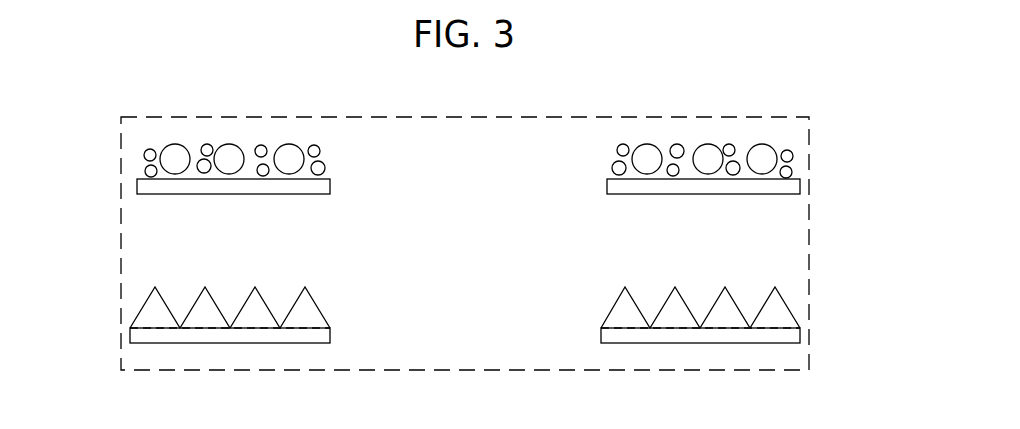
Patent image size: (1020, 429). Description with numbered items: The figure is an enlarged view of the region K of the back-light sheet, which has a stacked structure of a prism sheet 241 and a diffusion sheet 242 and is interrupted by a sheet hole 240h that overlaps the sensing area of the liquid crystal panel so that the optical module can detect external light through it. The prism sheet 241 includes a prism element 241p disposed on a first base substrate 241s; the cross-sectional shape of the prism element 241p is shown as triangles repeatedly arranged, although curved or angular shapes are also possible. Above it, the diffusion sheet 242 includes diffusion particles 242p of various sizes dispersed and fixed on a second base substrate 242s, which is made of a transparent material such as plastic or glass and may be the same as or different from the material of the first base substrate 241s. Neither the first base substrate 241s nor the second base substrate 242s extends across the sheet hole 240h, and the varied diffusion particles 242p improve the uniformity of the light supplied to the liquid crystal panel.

The K1 region K is at (530, 117).
The sheet hole 240h is at (465, 237).
The prism sheet 241 is at (761, 323).
The prism element 241p is at (793, 308).
The first base substrate 241s is at (788, 334).
The diffusion sheet 242 is at (169, 177).
The diffusion particles 242p is at (139, 164).
The second base substrate 242s is at (135, 187).